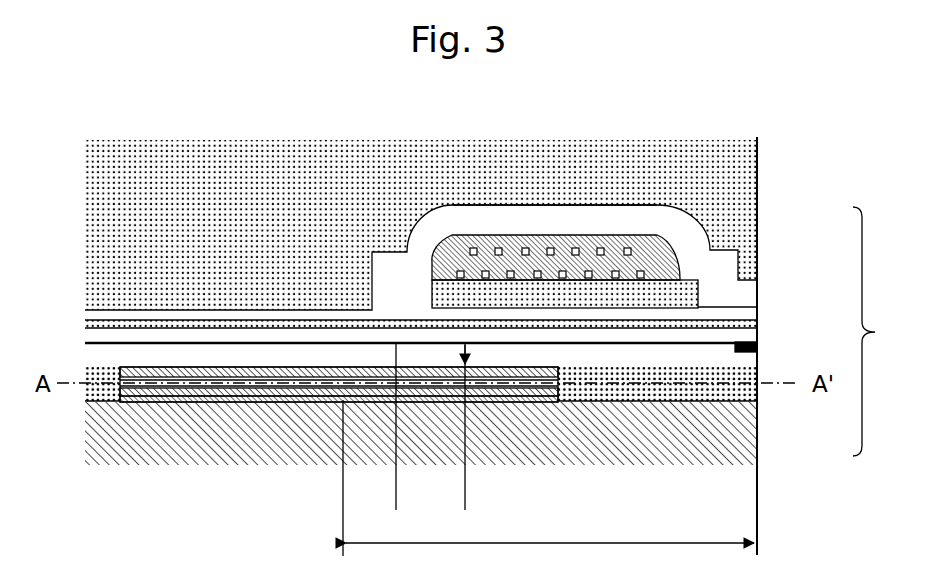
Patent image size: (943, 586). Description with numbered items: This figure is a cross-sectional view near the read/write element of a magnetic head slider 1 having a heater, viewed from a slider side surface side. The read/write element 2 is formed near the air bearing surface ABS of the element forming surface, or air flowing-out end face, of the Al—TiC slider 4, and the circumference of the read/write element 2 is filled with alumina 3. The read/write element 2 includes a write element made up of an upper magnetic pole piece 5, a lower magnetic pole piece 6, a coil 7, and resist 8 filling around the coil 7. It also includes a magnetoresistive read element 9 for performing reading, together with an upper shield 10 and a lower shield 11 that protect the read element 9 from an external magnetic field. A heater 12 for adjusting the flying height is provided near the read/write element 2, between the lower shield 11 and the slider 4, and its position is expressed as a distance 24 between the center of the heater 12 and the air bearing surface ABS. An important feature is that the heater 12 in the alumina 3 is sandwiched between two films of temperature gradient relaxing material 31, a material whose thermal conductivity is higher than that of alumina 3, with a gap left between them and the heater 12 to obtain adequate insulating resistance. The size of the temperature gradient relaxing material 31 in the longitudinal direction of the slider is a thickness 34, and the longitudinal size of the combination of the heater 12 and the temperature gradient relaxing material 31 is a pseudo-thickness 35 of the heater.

The magnetic head slider 1 is at (762, 470).
The read/write element 2 is at (875, 331).
The alumina 3 is at (648, 161).
The slider 4 is at (660, 457).
The upper magnetic pole piece 5 is at (727, 266).
The lower magnetic pole piece 6 is at (760, 302).
The coil 7 is at (503, 253).
The resist 8 is at (458, 232).
The read element 9 is at (760, 346).
The upper shield 10 is at (760, 324).
The lower shield 11 is at (753, 360).
The heater 12 is at (192, 385).
The distance 24 is at (548, 478).
The temperature gradient relaxing material 31 is at (307, 385).
The thickness 34 is at (378, 428).
The pseudo-thickness 35 is at (449, 428).
The air bearing surface ABS is at (760, 176).